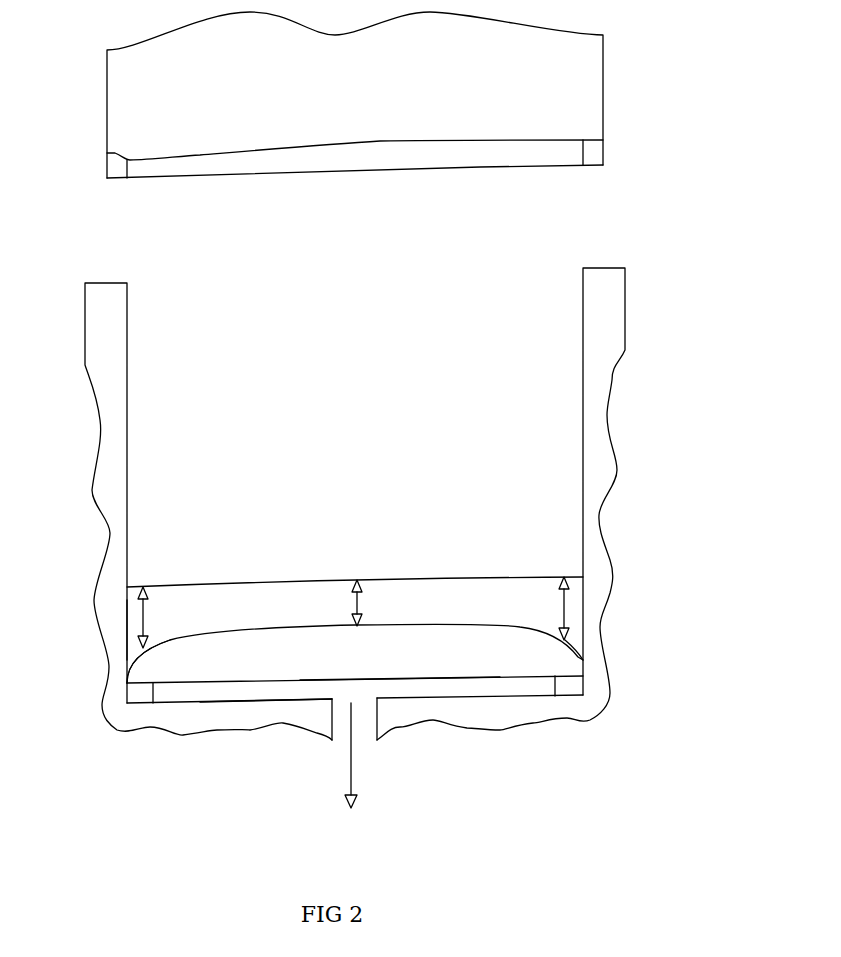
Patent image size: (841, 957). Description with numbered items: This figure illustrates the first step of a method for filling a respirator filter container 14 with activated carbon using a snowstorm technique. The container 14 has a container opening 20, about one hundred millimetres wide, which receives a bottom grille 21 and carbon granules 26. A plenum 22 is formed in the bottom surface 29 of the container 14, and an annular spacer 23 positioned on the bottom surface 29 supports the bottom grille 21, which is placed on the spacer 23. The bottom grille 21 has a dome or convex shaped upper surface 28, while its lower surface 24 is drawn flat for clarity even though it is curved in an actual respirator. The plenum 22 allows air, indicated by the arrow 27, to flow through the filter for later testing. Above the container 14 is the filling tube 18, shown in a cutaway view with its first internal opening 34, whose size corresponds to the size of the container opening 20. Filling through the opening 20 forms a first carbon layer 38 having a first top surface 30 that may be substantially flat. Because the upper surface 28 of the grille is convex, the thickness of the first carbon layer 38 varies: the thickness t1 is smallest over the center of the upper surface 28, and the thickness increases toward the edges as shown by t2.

The container 14 is at (600, 312).
The filling tube 18 is at (590, 78).
The container opening 20 is at (147, 315).
The bottom grille 21 is at (157, 668).
The plenum 22 is at (342, 702).
The annular spacer 23 is at (571, 685).
The lower surface of the bottom grille 24 is at (447, 677).
The carbon granules 26 is at (570, 615).
The arrow indicating air flow 27 is at (347, 750).
The upper surface of the bottom grille 28 is at (580, 648).
The bottom surface of the container 29 is at (280, 700).
The first top surface 30 is at (487, 578).
The first internal opening 34 is at (183, 177).
The first carbon layer 38 is at (132, 625).
The thickness of the first carbon layer at the center t1 is at (365, 582).
The thickness of the first carbon layer away from the center t2 is at (153, 585).